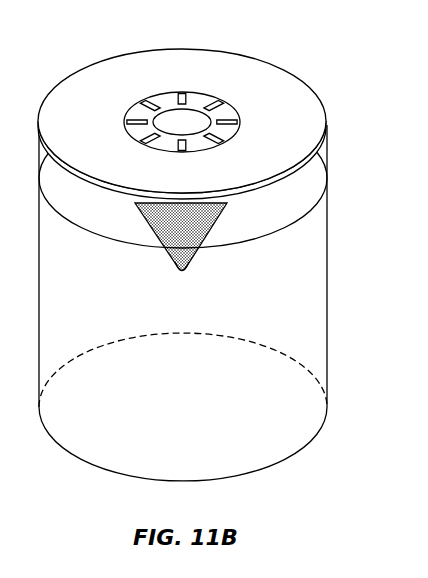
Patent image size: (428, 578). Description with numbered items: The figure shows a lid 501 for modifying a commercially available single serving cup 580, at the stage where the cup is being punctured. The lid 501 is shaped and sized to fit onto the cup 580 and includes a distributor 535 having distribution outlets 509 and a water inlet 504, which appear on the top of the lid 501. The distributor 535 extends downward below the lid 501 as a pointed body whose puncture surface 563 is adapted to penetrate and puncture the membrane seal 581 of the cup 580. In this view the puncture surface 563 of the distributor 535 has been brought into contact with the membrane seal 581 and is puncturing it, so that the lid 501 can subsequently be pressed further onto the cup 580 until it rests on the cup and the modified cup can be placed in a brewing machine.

The lid 501 is at (100, 72).
The water inlet 504 is at (228, 112).
The distribution outlets 509 is at (163, 118).
The distributor 535 is at (157, 260).
The puncture surface 563 is at (186, 277).
The single serving cup 580 is at (313, 308).
The membrane seal 581 is at (302, 189).